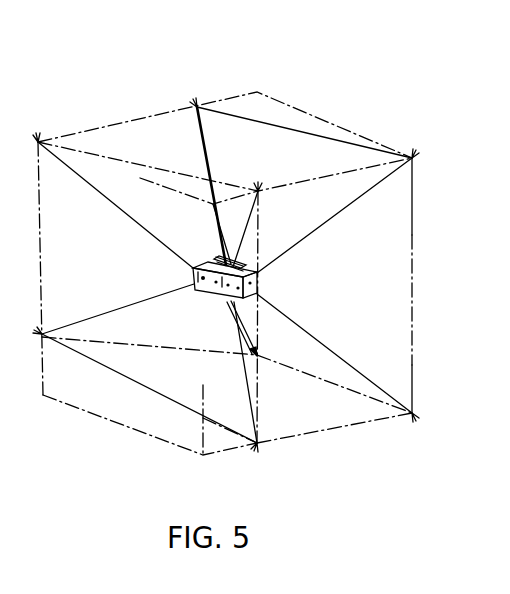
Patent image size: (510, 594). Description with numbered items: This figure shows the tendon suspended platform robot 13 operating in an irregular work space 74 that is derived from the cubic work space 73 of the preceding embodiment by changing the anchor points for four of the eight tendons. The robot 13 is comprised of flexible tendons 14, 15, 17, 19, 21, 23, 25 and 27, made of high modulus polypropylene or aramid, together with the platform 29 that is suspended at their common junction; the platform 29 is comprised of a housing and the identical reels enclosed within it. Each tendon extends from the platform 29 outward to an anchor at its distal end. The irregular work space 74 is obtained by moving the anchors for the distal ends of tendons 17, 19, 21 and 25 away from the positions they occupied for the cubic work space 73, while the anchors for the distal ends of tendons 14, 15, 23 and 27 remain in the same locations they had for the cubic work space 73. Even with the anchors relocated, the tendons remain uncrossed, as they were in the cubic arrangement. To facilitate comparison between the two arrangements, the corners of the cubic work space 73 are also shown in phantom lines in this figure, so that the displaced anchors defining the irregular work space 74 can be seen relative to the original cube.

The tendon suspended platform robot 13 is at (135, 108).
The flexible tendon 14 is at (300, 243).
The flexible tendon 15 is at (304, 327).
The flexible tendon 17 is at (250, 396).
The flexible tendon 19 is at (250, 220).
The flexible tendon 21 is at (133, 303).
The flexible tendon 23 is at (118, 210).
The flexible tendon 25 is at (203, 158).
The flexible tendon 27 is at (244, 318).
The platform 29 is at (206, 256).
The cubic work space 73 is at (300, 105).
The irregular work space 74 is at (128, 386).